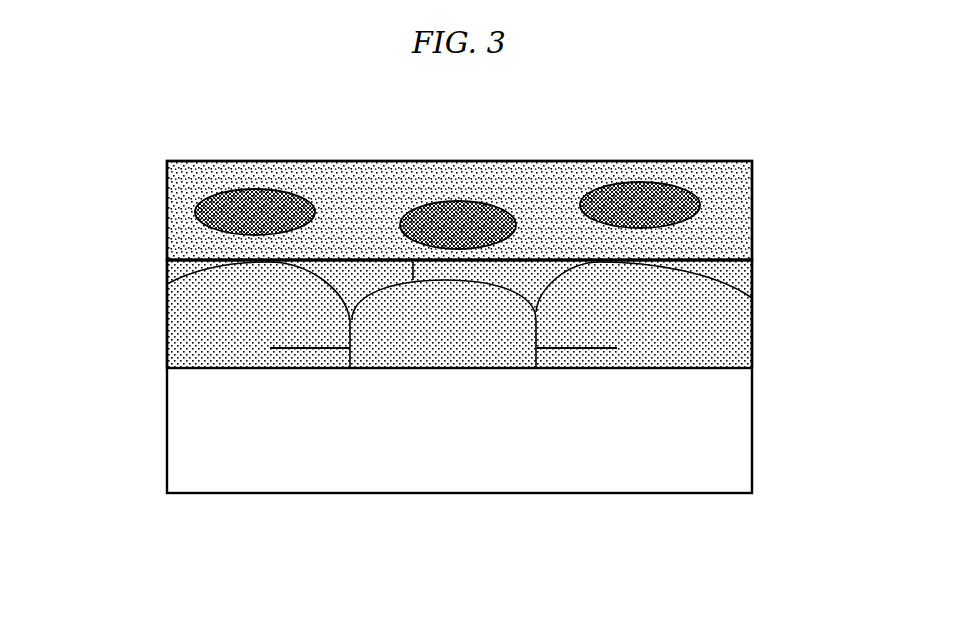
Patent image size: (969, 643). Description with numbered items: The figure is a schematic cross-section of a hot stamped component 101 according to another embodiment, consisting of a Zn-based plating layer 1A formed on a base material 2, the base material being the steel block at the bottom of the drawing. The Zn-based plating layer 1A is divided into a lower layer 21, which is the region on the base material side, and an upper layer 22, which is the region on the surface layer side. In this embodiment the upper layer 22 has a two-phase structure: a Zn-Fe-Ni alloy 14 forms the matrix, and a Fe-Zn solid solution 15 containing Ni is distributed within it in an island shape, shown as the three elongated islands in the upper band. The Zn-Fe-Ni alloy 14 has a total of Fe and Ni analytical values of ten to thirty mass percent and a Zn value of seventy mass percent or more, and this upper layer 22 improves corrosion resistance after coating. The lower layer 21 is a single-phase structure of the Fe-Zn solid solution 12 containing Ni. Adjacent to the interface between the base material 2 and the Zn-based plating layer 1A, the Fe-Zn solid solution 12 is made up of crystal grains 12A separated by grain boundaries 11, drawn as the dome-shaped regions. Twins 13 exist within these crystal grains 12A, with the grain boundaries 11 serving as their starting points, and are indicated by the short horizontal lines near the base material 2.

The hot stamped component 101 is at (709, 147).
The Zn-based plating layer 1A is at (153, 368).
The base material 2 is at (457, 470).
The grain boundaries 11 is at (548, 265).
The Fe-Zn solid solution containing Ni 12 is at (204, 333).
The crystal grains 12A is at (227, 348).
The twins 13 is at (310, 348).
The Zn-Fe-Ni alloy 14 is at (368, 160).
The Fe-Zn solid solution containing Ni 15 is at (640, 183).
The lower layer 21 is at (766, 263).
The upper layer 22 is at (766, 161).